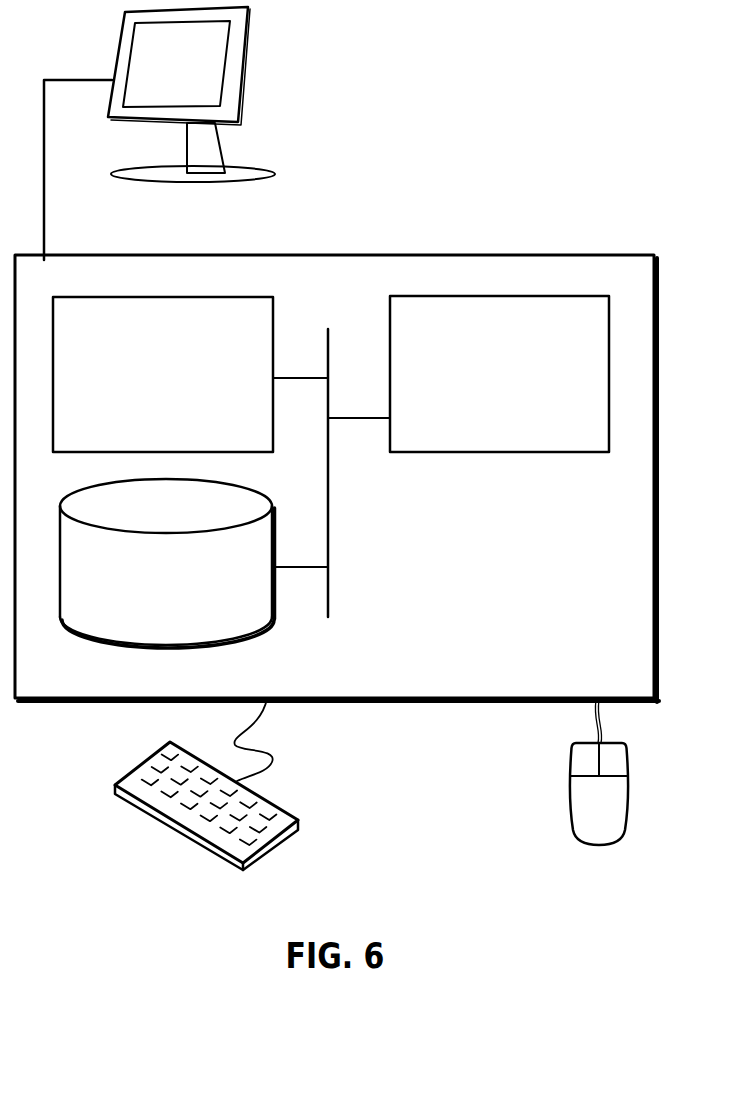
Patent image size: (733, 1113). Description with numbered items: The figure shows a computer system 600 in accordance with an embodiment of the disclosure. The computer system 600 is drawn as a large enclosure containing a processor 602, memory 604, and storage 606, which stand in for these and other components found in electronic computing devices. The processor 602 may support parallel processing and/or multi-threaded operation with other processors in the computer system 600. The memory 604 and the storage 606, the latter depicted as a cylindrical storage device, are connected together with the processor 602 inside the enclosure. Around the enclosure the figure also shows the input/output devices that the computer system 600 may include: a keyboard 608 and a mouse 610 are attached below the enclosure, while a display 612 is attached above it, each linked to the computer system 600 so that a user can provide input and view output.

The computer system 600 is at (380, 233).
The processor 602 is at (483, 387).
The memory 604 is at (143, 386).
The storage 606 is at (149, 591).
The keyboard 608 is at (132, 802).
The mouse 610 is at (578, 815).
The display 612 is at (159, 133).